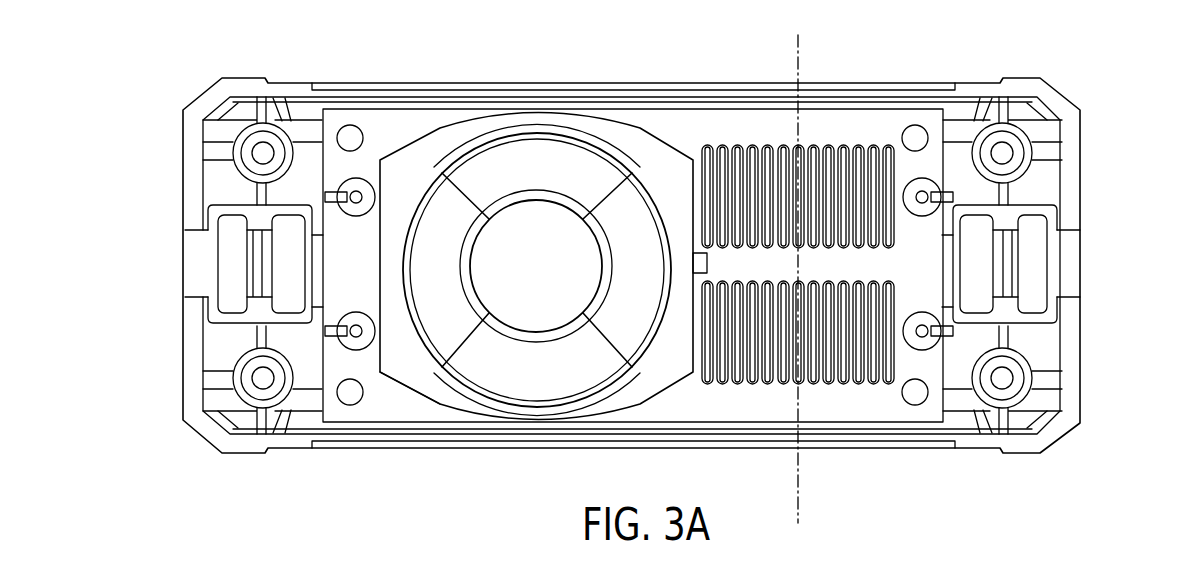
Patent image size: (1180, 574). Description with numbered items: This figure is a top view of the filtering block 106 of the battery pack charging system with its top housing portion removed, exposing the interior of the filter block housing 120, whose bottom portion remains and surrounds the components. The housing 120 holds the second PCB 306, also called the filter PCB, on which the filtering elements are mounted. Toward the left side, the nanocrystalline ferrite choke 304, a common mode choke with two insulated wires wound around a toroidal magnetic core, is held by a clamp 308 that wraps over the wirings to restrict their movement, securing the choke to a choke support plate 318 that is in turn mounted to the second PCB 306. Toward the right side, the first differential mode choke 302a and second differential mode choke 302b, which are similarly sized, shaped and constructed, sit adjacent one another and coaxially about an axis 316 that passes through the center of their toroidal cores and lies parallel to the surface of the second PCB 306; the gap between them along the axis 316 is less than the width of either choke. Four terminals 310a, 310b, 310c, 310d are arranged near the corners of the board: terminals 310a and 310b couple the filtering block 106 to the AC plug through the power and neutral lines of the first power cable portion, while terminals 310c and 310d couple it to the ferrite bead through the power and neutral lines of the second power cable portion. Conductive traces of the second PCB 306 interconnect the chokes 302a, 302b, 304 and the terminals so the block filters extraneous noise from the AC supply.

The filtering block 106 is at (1091, 443).
The filter block housing 120 is at (185, 232).
The first differential mode choke 302a is at (760, 388).
The second differential mode choke 302b is at (838, 143).
The nanocrystalline ferrite choke 304 is at (425, 223).
The second PCB 306 is at (672, 130).
The clamp 308 is at (490, 150).
The terminal 310a is at (923, 185).
The terminal 310b is at (935, 327).
The terminal 310c is at (332, 197).
The terminal 310d is at (325, 332).
The axis 316 is at (803, 457).
The choke support plate 318 is at (423, 360).